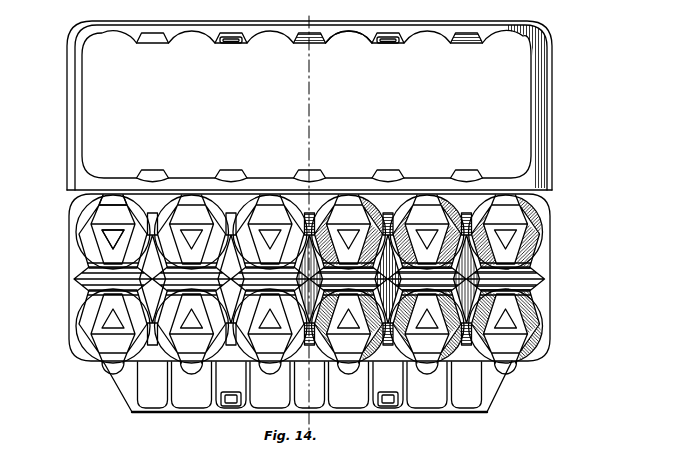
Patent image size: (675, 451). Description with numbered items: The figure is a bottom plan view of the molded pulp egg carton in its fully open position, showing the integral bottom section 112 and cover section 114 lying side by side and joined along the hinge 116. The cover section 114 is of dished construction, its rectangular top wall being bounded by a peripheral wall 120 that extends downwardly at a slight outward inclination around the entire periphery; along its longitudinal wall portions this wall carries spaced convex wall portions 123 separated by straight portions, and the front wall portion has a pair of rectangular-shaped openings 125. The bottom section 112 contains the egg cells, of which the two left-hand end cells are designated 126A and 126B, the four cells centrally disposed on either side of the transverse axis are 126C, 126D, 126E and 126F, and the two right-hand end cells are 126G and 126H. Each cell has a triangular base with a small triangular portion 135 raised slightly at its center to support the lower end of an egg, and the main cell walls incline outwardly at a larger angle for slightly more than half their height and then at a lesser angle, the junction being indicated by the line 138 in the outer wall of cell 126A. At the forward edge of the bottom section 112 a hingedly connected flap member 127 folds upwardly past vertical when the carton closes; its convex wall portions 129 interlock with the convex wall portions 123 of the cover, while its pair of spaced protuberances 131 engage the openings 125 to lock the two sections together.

The bottom section 112 is at (67, 274).
The cover section 114 is at (68, 140).
The hinge 116 is at (82, 190).
The peripheral wall 120 is at (78, 97).
The convex wall portions 123 is at (352, 34).
The rectangular-shaped openings 125 is at (389, 45).
The end cell 126A is at (85, 334).
The end cell 126B is at (80, 224).
The centrally disposed cell 126C is at (272, 340).
The centrally disposed cell 126D is at (292, 216).
The centrally disposed cell 126E is at (372, 348).
The centrally disposed cell 126F is at (375, 207).
The end cell 126G is at (544, 327).
The end cell 126H is at (543, 220).
The flap member 127 is at (116, 390).
The convex wall portions 129 is at (197, 392).
The protuberances 131 is at (230, 406).
The small triangular portion 135 is at (112, 237).
The line 138 is at (111, 199).